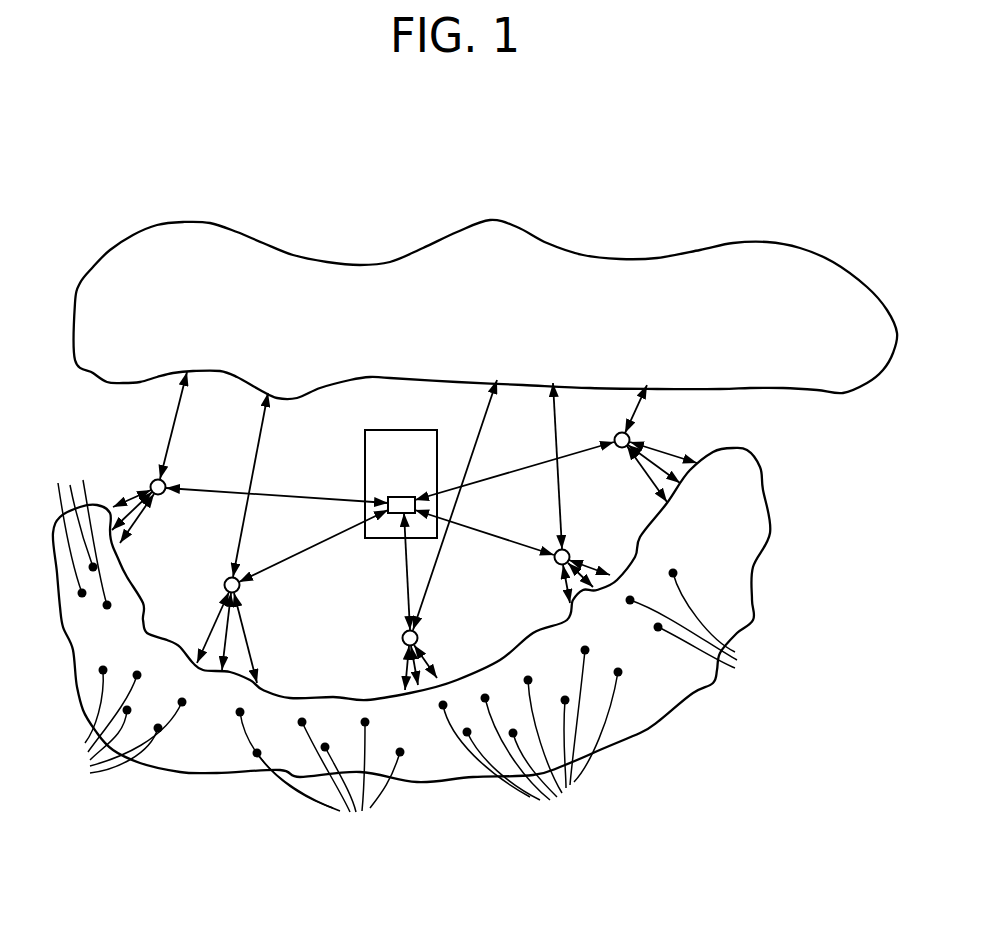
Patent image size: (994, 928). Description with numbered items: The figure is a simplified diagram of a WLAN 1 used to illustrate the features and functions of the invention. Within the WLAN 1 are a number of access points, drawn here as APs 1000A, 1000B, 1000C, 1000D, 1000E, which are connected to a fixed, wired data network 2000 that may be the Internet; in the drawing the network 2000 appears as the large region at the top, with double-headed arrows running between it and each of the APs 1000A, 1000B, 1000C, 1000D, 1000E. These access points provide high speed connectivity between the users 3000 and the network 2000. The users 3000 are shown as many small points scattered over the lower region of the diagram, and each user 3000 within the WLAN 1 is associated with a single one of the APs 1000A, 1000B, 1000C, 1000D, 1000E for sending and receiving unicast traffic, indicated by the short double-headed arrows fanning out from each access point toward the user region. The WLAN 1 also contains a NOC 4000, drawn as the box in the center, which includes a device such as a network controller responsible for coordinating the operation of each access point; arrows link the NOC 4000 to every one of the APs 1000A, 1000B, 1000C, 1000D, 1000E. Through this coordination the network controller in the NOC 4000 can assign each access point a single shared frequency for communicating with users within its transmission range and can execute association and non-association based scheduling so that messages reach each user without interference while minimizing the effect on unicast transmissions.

The WLAN 1 is at (120, 394).
The fixed, wired data network 2000 is at (118, 243).
The NOC 4000 is at (365, 480).
The AP 1000A is at (130, 485).
The AP 1000B is at (203, 603).
The AP 1000C is at (383, 665).
The AP 1000D is at (547, 568).
The AP 1000E is at (608, 458).
The users 3000 is at (412, 643).